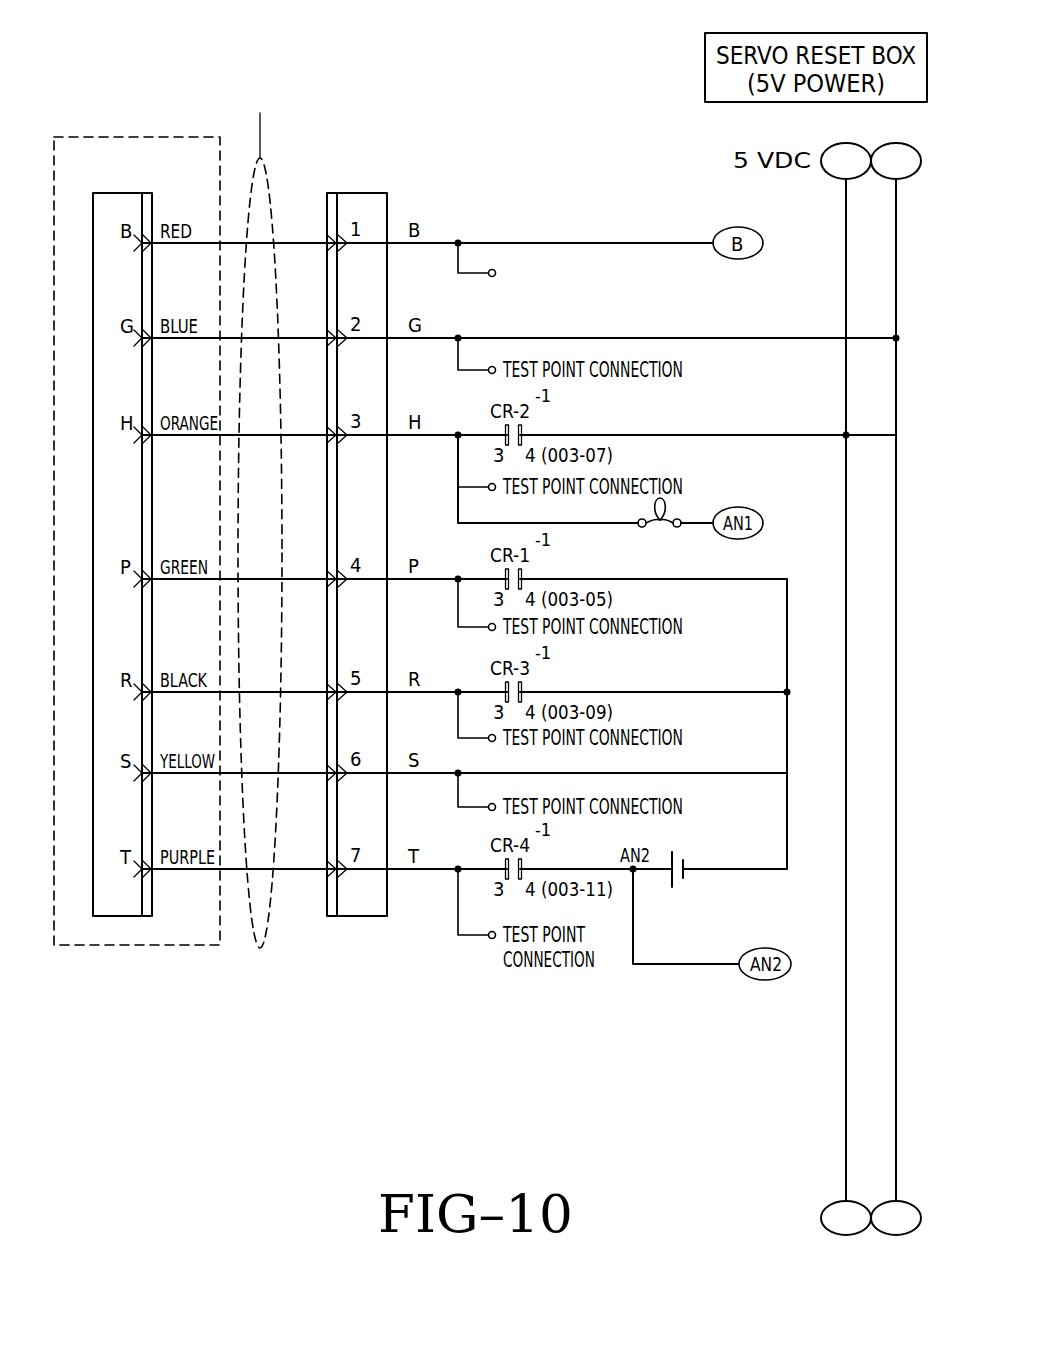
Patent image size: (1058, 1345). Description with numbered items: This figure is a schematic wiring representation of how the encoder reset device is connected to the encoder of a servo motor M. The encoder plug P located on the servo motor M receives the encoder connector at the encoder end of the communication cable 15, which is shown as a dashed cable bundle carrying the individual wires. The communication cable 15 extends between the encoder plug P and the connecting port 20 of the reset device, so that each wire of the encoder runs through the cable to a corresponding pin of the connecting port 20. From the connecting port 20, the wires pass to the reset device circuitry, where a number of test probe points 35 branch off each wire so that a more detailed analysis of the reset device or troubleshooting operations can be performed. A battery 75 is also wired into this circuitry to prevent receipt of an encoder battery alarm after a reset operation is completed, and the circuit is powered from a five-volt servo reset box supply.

The servo motor M is at (78, 108).
The encoder plug P is at (130, 143).
The communication cable 15 is at (265, 182).
The connecting port 20 is at (375, 208).
The test probe points 35 is at (495, 256).
The battery 75 is at (700, 862).